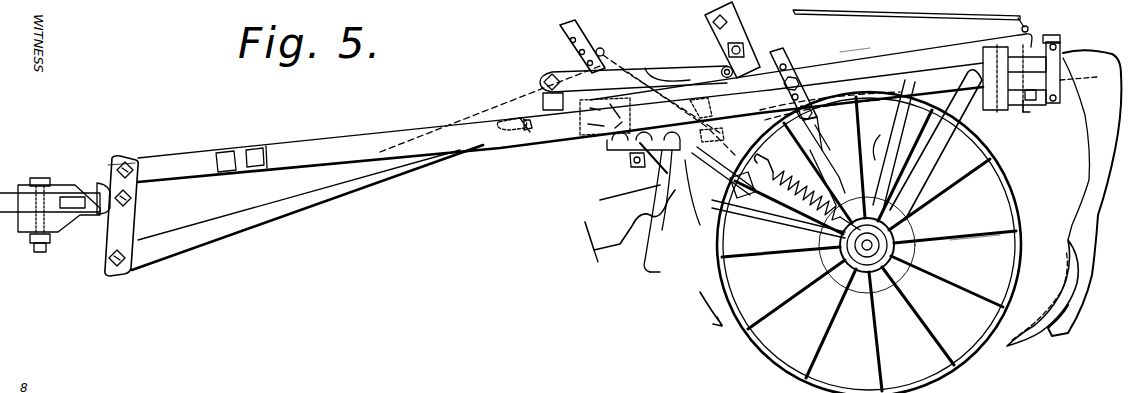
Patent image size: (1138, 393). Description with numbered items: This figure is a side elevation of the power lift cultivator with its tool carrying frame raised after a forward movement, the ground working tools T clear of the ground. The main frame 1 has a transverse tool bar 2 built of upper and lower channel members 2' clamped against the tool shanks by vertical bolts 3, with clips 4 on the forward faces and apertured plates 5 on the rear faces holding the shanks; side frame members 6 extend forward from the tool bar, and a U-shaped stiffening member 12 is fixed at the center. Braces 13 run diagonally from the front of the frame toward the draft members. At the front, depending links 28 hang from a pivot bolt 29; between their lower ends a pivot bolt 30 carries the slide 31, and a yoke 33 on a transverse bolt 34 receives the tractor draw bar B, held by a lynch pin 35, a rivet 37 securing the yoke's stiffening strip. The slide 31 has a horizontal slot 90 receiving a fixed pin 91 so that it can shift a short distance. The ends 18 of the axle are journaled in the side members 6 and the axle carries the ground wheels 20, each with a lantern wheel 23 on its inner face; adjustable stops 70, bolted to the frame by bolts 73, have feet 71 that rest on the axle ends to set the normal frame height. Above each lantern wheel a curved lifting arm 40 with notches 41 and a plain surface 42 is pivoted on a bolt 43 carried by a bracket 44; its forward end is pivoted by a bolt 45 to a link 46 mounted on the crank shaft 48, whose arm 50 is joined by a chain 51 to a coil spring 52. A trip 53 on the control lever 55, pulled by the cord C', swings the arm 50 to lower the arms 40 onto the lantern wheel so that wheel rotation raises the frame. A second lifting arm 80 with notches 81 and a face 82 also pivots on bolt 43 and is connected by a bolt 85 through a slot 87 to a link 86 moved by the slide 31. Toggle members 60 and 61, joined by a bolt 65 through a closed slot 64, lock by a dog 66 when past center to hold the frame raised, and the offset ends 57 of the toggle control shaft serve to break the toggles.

The draw bar B is at (12, 185).
The yoke 33 is at (72, 185).
The lynch pin 35 is at (44, 178).
The rivet 37 is at (97, 218).
The links 28 is at (134, 230).
The pivot bolt 29 is at (132, 162).
The bolt 34 is at (134, 198).
The pivot bolt 30 is at (121, 270).
The braces 13 is at (335, 144).
The slide 31 is at (302, 200).
The side frame members 6 is at (811, 63).
The control lever 55 is at (856, 50).
The rod C' is at (908, 18).
The apertured plates 5 is at (1060, 52).
The channel members 2' is at (1056, 25).
The plates or clips 4 is at (995, 110).
The tool bar 2 is at (1033, 115).
The bolts 3 is at (1023, 112).
The ground working tools T is at (1095, 163).
The ground wheels 20 is at (772, 360).
The lantern wheel 23 is at (900, 255).
The ends of the axle 18 is at (935, 165).
The plain edge or surface 42 is at (940, 178).
The lifting arm 40 is at (877, 190).
The notches 41 is at (846, 165).
The main frame 1 is at (879, 110).
The stiffening member 12 is at (830, 93).
The adjustable stops 70 is at (790, 55).
The bolts 73 is at (838, 118).
The foot 71 is at (838, 133).
The arm 50 is at (570, 48).
The chain 51 is at (614, 56).
The link 86 is at (690, 70).
The slot 87 is at (660, 65).
The bolt 85 is at (722, 70).
The link 46 is at (716, 30).
The bolt 45 is at (735, 22).
The pivot bolt 43 is at (750, 48).
The slot 90 is at (505, 118).
The pin 91 is at (522, 138).
The trip 53 is at (720, 122).
The bolt 65 is at (718, 165).
The crank shaft 48 is at (635, 178).
The lifting arms 80 is at (602, 218).
The face 82 is at (605, 258).
The angularly offset ends 57 is at (660, 252).
The notches 81 is at (652, 272).
The toggle member 60 is at (680, 220).
The toggle member 61 is at (700, 232).
The dog 66 is at (750, 230).
The closed slot 64 is at (745, 215).
The bracket 44 is at (778, 156).
The coil spring 52 is at (778, 222).